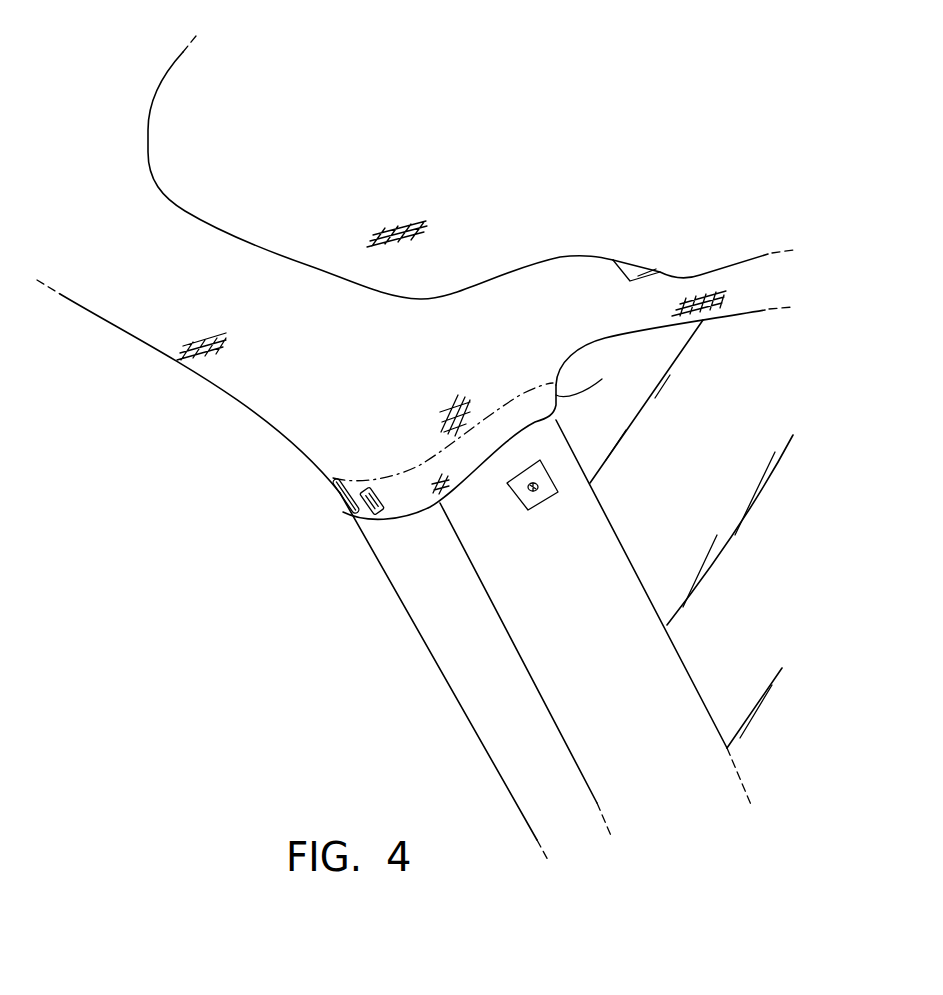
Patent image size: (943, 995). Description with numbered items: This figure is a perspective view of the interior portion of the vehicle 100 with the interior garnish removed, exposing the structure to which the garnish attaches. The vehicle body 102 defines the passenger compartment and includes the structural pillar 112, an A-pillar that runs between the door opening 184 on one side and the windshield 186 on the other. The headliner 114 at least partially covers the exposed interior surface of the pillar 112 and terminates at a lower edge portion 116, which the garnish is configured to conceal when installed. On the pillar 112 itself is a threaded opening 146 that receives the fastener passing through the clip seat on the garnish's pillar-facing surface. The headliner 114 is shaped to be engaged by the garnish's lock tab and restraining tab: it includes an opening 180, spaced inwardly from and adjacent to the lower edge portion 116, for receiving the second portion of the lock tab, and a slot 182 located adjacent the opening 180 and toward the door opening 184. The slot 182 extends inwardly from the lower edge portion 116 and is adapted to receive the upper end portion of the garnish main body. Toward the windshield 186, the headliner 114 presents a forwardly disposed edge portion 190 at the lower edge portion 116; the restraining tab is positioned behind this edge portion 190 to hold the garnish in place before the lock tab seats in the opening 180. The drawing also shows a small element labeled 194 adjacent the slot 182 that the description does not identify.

The vehicle 100 is at (508, 118).
The vehicle body 102 is at (507, 804).
The structural pillar 112 is at (660, 680).
The headliner 114 is at (430, 326).
The lower edge portion 116 is at (463, 480).
The threaded opening 146 is at (545, 498).
The opening 180 is at (403, 510).
The slot 182 is at (335, 490).
The door opening 184 is at (388, 698).
The windshield 186 is at (690, 479).
The edge portion 190 is at (674, 344).
The fastener 194 is at (345, 505).